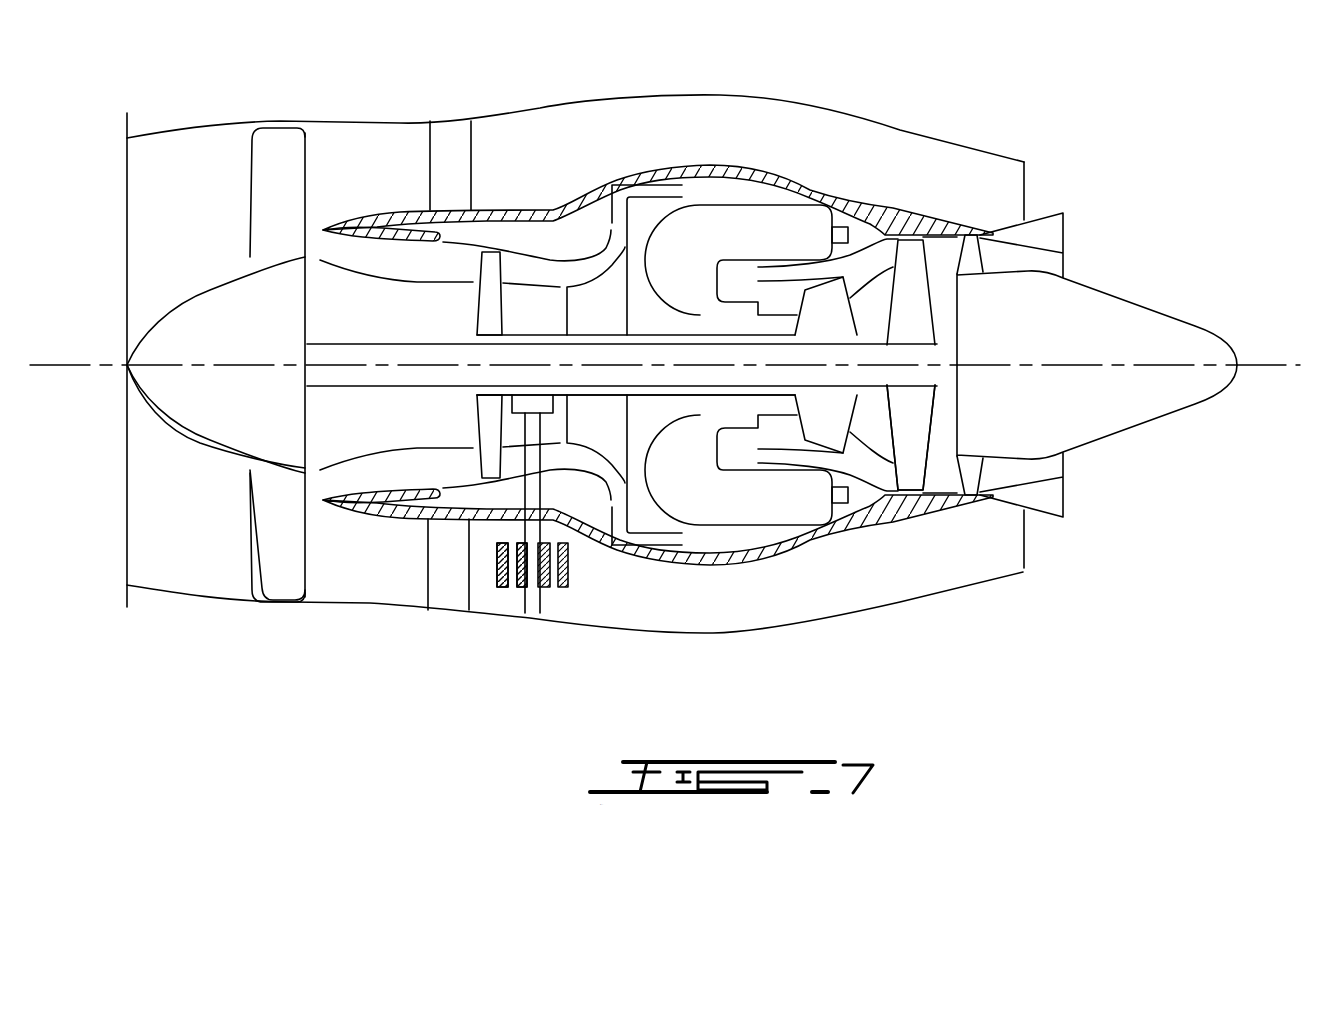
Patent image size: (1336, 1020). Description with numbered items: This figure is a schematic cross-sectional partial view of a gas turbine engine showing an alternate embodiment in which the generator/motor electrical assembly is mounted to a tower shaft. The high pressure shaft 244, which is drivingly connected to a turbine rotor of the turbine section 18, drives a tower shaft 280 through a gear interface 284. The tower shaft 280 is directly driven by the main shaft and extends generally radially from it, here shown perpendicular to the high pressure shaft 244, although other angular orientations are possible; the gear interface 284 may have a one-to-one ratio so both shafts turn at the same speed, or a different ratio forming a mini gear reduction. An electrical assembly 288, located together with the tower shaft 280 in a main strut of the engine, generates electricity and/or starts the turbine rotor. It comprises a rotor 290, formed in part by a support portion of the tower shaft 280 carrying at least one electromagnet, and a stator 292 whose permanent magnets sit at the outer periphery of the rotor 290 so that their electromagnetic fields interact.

The turbine section 18 is at (939, 470).
The high pressure shaft 244 is at (667, 396).
The tower shaft 280 is at (535, 607).
The gear interface 284 is at (512, 402).
The electrical assembly 288 is at (480, 545).
The rotor 290 is at (525, 573).
The stator 292 is at (497, 568).